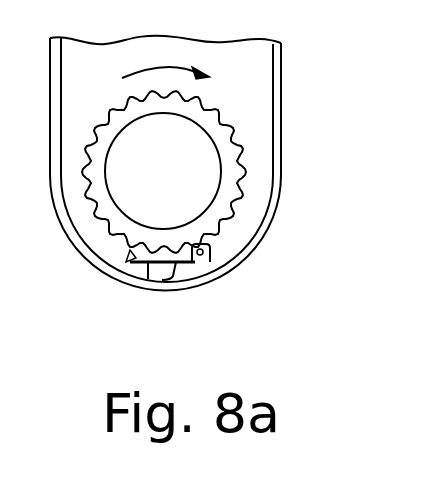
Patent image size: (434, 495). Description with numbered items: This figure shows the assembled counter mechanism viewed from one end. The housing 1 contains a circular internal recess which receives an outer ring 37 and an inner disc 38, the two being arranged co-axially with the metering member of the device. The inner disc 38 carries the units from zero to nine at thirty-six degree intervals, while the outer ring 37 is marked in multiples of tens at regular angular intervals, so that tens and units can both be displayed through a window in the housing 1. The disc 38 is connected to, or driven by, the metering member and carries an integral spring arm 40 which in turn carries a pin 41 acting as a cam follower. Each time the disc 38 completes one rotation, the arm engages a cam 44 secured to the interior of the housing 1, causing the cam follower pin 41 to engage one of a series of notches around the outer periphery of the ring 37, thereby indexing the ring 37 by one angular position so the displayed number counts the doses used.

The housing 1 is at (280, 97).
The outer ring 37 is at (222, 198).
The inner disc 38 is at (197, 167).
The spring arm 40 is at (125, 259).
The pin 41 is at (196, 257).
The cam 44 is at (167, 276).